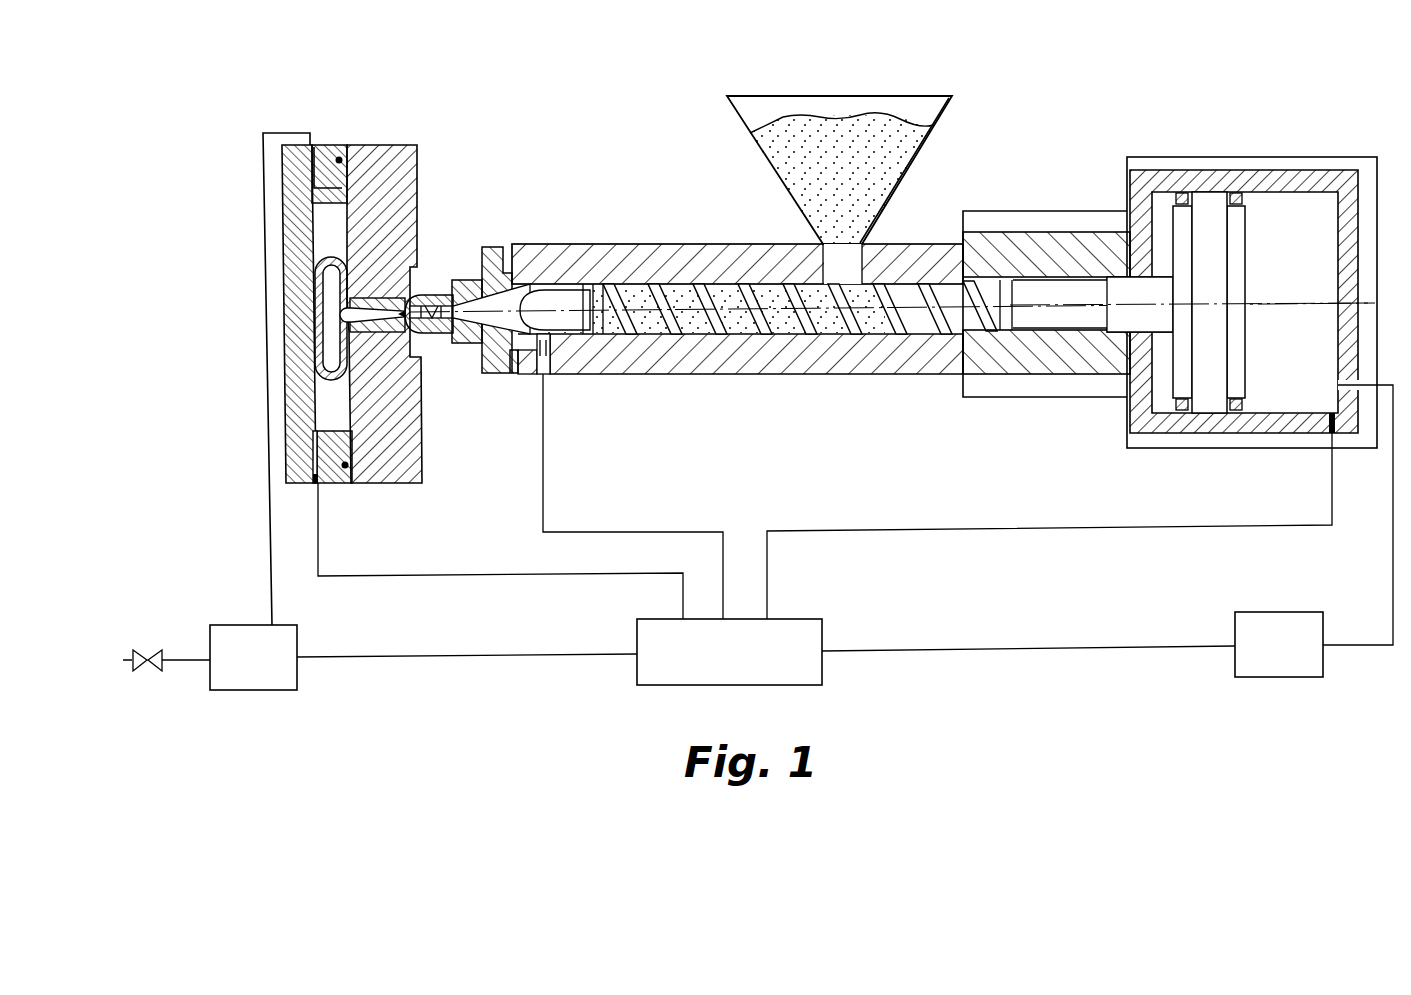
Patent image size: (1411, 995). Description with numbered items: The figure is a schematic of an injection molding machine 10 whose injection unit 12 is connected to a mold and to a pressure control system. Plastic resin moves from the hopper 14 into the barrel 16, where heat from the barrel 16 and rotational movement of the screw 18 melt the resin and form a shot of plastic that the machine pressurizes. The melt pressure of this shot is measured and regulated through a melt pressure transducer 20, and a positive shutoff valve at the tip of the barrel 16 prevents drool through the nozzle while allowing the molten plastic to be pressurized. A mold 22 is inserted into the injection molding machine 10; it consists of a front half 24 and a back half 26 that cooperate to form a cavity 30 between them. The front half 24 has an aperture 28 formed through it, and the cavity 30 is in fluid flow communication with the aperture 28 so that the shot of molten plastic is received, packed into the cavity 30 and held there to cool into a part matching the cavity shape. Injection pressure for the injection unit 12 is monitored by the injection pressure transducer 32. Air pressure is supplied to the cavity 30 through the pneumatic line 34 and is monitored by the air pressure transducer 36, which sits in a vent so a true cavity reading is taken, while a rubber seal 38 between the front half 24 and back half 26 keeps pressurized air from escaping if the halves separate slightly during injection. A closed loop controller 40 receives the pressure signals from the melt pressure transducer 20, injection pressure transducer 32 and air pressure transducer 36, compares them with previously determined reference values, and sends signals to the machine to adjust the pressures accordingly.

The injection molding machine 10 is at (1064, 82).
The injection unit 12 is at (892, 357).
The hopper 14 is at (752, 131).
The barrel 16 is at (595, 244).
The screw 18 is at (748, 300).
The melt pressure transducer 20 is at (630, 476).
The mold 22 is at (428, 168).
The front half 24 is at (410, 143).
The back half 26 is at (328, 143).
The aperture 28 is at (365, 295).
The cavity 30 is at (304, 221).
The injection pressure transducer 32 is at (1333, 478).
The pneumatic line 34 is at (263, 198).
The air pressure transducer 36 is at (318, 484).
The rubber seal 38 is at (370, 470).
The closed loop controller 40 is at (822, 673).